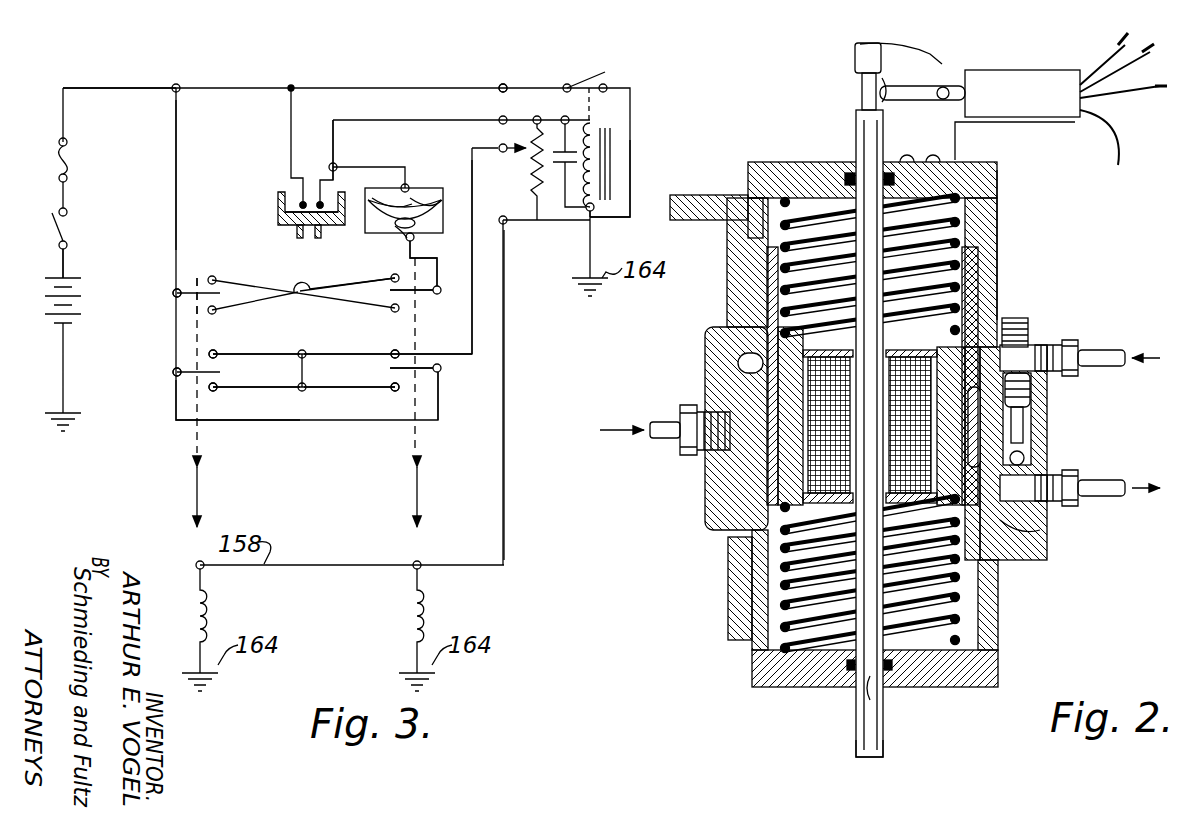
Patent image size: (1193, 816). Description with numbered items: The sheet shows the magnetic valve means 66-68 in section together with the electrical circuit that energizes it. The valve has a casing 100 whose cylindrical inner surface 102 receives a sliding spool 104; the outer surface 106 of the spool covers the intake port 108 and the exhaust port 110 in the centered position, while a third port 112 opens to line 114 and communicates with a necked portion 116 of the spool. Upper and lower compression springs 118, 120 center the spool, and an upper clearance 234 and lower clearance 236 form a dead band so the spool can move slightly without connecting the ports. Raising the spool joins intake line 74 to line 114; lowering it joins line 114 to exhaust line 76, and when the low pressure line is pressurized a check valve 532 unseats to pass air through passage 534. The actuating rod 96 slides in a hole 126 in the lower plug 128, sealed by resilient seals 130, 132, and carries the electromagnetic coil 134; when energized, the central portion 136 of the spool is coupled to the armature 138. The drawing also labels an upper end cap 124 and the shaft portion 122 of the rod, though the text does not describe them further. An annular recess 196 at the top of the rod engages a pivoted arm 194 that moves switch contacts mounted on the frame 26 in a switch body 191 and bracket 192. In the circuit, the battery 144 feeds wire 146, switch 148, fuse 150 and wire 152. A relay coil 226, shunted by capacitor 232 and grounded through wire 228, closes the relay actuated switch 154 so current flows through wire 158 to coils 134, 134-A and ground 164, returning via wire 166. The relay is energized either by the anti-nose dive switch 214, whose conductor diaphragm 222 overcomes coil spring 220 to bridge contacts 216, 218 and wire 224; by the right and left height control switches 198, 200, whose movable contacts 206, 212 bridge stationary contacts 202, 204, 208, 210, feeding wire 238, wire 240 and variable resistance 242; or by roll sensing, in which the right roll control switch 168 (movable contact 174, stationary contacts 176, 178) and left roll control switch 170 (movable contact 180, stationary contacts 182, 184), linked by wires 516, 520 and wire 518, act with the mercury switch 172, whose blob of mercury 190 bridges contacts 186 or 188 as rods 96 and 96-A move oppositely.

In FIG. 3, the wire 152 is at (127, 86).
In FIG. 3, the fuse 150 is at (80, 172).
In FIG. 3, the wire 238 is at (176, 186).
In FIG. 3, the switch 148 is at (66, 220).
In FIG. 3, the wire 146 is at (66, 272).
In FIG. 3, the right roll control switch 168 is at (174, 295).
In FIG. 3, the battery 144 is at (80, 305).
In FIG. 3, the right height control switch 198 is at (172, 372).
In FIG. 3, the wire 166 is at (110, 414).
In FIG. 3, the ground 164 is at (64, 435).
In FIG. 3, the movable contact 206 is at (200, 405).
In FIG. 3, the actuating rod 96 is at (192, 474).
In FIG. 2, the actuating rod 96 is at (858, 746).
In FIG. 3, the movable contact 174 is at (202, 298).
In FIG. 3, the stationary contact 176 is at (214, 280).
In FIG. 3, the stationary contact 178 is at (212, 312).
In FIG. 3, the stationary contact 202 is at (220, 352).
In FIG. 3, the stationary contact 204 is at (214, 387).
In FIG. 3, the wire 520 is at (272, 296).
In FIG. 3, the wire 516 is at (276, 302).
In FIG. 3, the stationary contact 182 is at (394, 278).
In FIG. 3, the stationary contact 184 is at (395, 308).
In FIG. 3, the stationary contact 210 is at (397, 387).
In FIG. 3, the centrifugally actuated mercury switch 172 is at (406, 230).
In FIG. 3, the movable contact 180 is at (422, 260).
In FIG. 3, the left roll control switch 170 is at (444, 286).
In FIG. 3, the stationary contact 208 is at (398, 354).
In FIG. 3, the movable contact 212 is at (424, 372).
In FIG. 3, the left height control switch 200 is at (446, 367).
In FIG. 3, the contact 216 is at (312, 194).
In FIG. 3, the coil spring 220 is at (300, 202).
In FIG. 3, the anti-nose dive switch 214 is at (280, 202).
In FIG. 3, the conductor diaphragm 222 is at (302, 210).
In FIG. 3, the contact 218 is at (324, 168).
In FIG. 3, the right pair of contacts 186 is at (407, 198).
In FIG. 3, the left pair of contacts 188 is at (412, 186).
In FIG. 3, the blob of mercury 190 is at (404, 188).
In FIG. 3, the wire 224 is at (421, 90).
In FIG. 3, the relay actuated switch 154 is at (572, 74).
In FIG. 3, the relay coil 226 is at (596, 130).
In FIG. 3, the wire 158 is at (632, 148).
In FIG. 3, the variable resistance 242 is at (534, 150).
In FIG. 3, the capacitor 232 is at (546, 198).
In FIG. 3, the wire 240 is at (500, 238).
In FIG. 3, the wire 228 is at (598, 266).
In FIG. 3, the wire 518 is at (502, 280).
In FIG. 3, the actuating rod 96-A is at (416, 446).
In FIG. 3, the electromagnetic coil 134 is at (250, 600).
In FIG. 2, the electromagnetic coil 134 is at (734, 512).
In FIG. 3, the electromagnetic coil 134-A is at (472, 604).
In FIG. 2, the end cap 124 is at (768, 162).
In FIG. 2, the frame 26 is at (710, 192).
In FIG. 2, the cylindrical inner surface 102 is at (742, 200).
In FIG. 2, the central portion of spool 136 is at (716, 352).
In FIG. 2, the armature 138 is at (732, 478).
In FIG. 2, the casing 100 is at (1004, 234).
In FIG. 2, the lower plug 128 is at (761, 684).
In FIG. 2, the outer surface of spool 106 is at (982, 324).
In FIG. 2, the exhaust port 110 is at (1004, 560).
In FIG. 2, the lower clearance 236 is at (1017, 534).
In FIG. 2, the necked portion 116 is at (752, 410).
In FIG. 2, the third port 112 is at (788, 440).
In FIG. 2, the spool 104 is at (988, 254).
In FIG. 2, the lower compression spring 120 is at (790, 632).
In FIG. 2, the shaft 122 is at (850, 162).
In FIG. 2, the hole 126 is at (880, 694).
In FIG. 2, the resilient seal 132 is at (852, 684).
In FIG. 2, the upper compression spring 118 is at (796, 222).
In FIG. 2, the annular recess 196 is at (856, 84).
In FIG. 2, the pivoted arm 194 is at (904, 94).
In FIG. 2, the switch body 191 is at (1062, 42).
In FIG. 2, the bracket 192 is at (1068, 130).
In FIG. 2, the resilient seal 130 is at (946, 156).
In FIG. 2, the valve means 66-68 is at (1060, 200).
In FIG. 2, the intake port 108 is at (1027, 360).
In FIG. 2, the intake line 74 is at (1110, 354).
In FIG. 2, the upper clearance 234 is at (1023, 374).
In FIG. 2, the passage 534 is at (1026, 440).
In FIG. 2, the check valve 532 is at (1034, 459).
In FIG. 2, the exhaust line 76 is at (1102, 496).
In FIG. 2, the line 114 is at (644, 422).